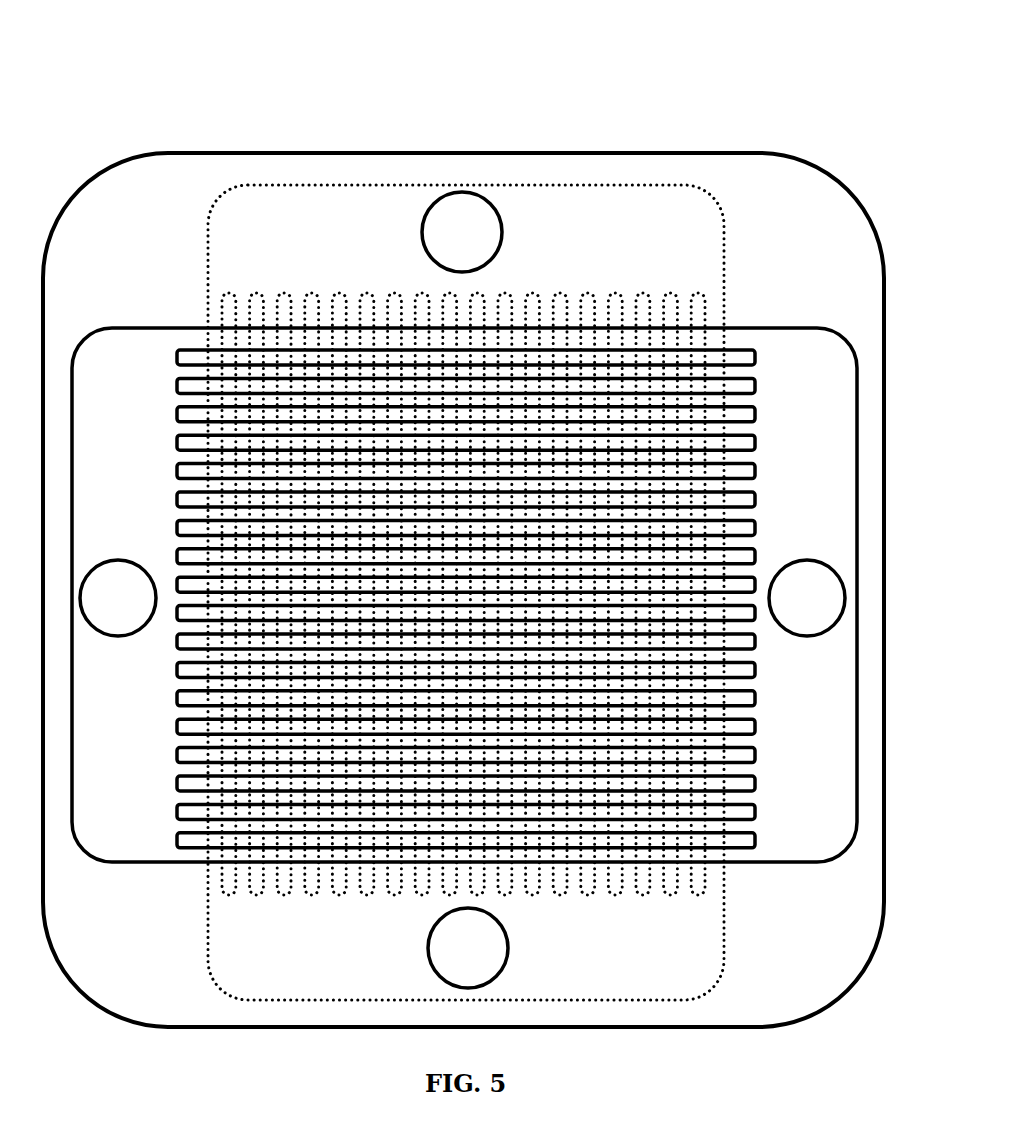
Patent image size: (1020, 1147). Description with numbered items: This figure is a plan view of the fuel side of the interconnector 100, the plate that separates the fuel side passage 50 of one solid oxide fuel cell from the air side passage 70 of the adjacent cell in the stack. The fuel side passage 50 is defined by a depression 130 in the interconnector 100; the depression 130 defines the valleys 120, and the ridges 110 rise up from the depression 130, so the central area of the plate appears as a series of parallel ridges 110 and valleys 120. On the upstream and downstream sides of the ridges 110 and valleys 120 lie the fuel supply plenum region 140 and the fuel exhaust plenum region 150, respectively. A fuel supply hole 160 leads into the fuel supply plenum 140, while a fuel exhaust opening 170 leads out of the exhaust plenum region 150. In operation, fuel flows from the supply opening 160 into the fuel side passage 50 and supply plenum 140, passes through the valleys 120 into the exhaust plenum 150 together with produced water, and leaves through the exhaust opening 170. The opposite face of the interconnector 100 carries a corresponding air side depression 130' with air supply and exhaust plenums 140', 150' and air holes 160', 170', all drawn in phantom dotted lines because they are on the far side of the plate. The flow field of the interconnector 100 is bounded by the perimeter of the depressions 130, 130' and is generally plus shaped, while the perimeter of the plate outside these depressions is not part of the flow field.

The interconnector 100 is at (193, 80).
The ridges 110 is at (482, 491).
The valleys 120 is at (177, 428).
The depression 130 is at (494, 677).
The air side depression 130' is at (491, 654).
The fuel side passage 50 is at (138, 496).
The air side passage 70 is at (348, 262).
The fuel supply plenum region 140 is at (117, 702).
The air supply plenum 140' is at (582, 239).
The fuel exhaust plenum region 150 is at (802, 706).
The air exhaust plenum 150' is at (580, 952).
The fuel supply hole 160 is at (133, 625).
The air supply hole 160' is at (470, 246).
The fuel exhaust opening 170 is at (790, 622).
The air exhaust hole 170' is at (474, 941).